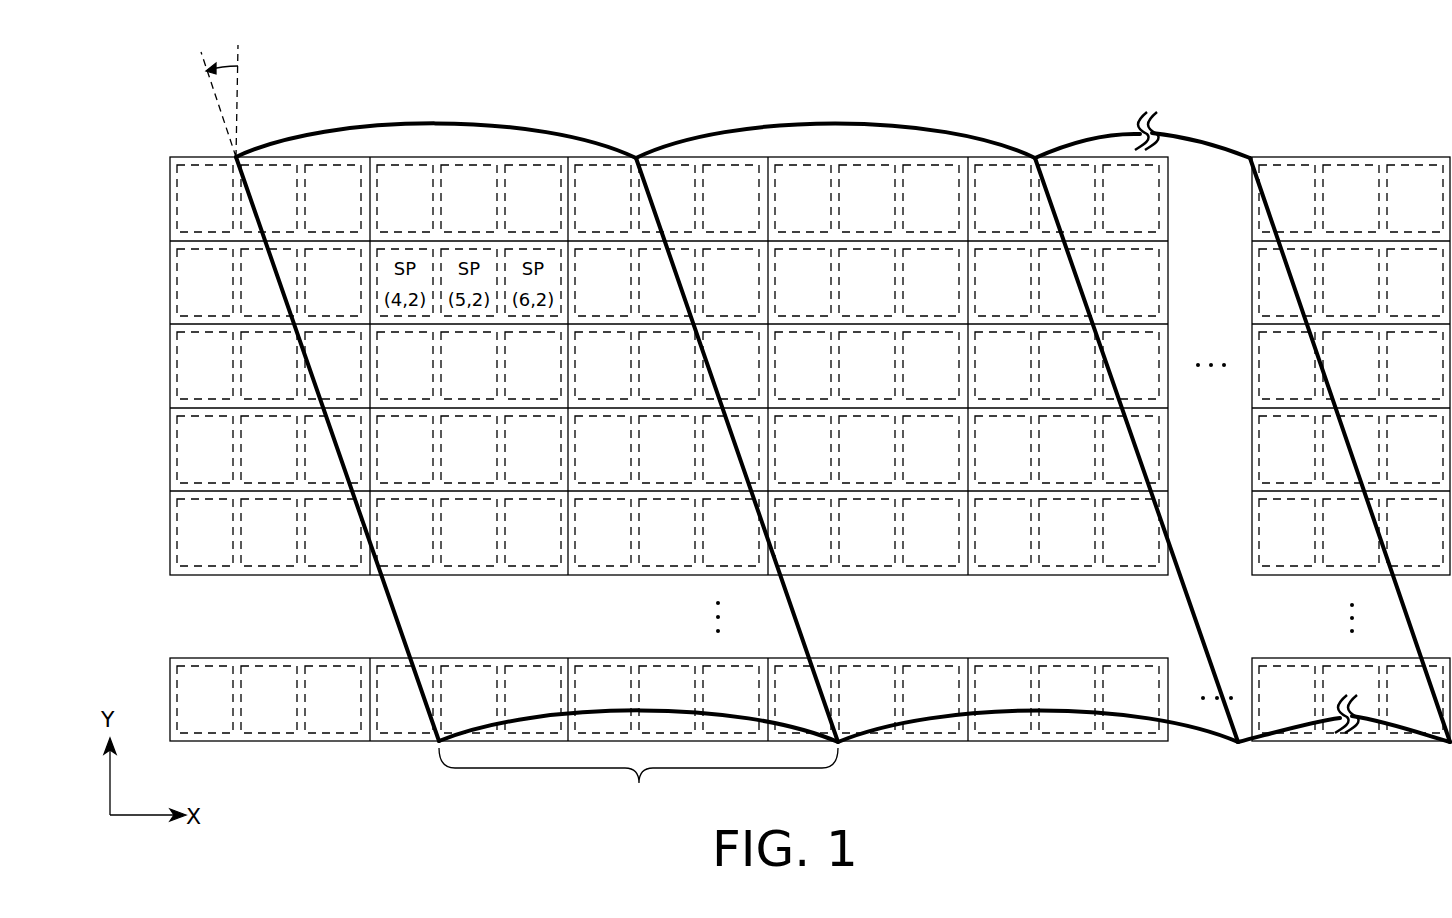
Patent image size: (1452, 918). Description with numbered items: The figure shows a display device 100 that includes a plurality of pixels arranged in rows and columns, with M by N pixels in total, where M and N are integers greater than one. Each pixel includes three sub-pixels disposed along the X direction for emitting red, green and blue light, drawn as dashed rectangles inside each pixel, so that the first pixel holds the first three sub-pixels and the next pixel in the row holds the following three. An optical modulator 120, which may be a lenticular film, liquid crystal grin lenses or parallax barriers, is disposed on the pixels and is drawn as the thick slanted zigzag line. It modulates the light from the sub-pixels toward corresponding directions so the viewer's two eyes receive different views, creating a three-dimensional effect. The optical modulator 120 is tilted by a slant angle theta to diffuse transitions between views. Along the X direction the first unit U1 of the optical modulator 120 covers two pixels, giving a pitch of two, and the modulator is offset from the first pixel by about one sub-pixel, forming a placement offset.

The display device 100 is at (1322, 68).
The optical modulator 120 is at (1084, 140).
The first unit U1 is at (638, 780).